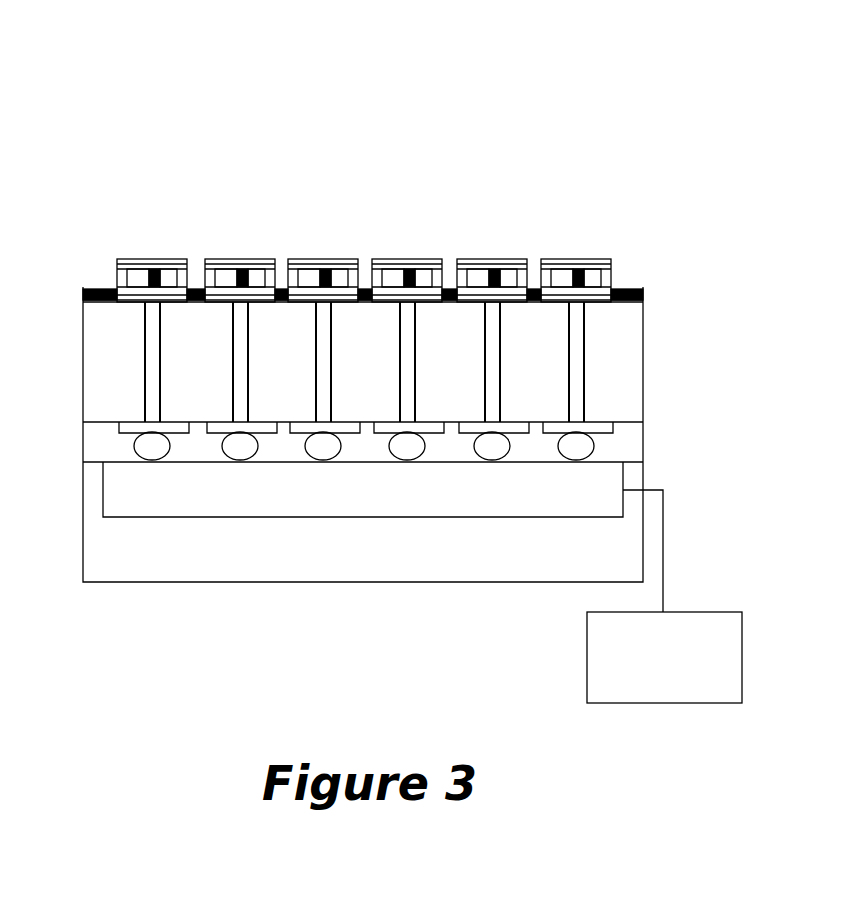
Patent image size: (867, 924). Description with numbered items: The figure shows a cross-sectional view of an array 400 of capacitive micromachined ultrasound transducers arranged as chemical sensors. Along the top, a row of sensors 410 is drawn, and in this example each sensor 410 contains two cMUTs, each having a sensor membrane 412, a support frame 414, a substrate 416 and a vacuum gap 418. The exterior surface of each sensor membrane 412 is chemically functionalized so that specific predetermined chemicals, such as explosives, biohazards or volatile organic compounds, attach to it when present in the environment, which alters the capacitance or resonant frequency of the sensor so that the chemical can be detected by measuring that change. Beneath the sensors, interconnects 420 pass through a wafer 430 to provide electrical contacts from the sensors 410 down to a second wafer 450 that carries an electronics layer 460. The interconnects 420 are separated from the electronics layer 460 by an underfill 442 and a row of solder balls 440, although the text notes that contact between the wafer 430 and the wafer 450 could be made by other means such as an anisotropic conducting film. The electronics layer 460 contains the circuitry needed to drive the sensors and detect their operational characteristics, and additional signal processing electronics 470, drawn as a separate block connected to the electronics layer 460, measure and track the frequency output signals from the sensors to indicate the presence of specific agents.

The sensor device 400 is at (160, 106).
The sensor 410 is at (426, 229).
The sensor membrane 412 is at (582, 259).
The support frame 414 is at (622, 277).
The substrate 416 is at (592, 299).
The vacuum gap 418 is at (595, 283).
The interconnects 420 is at (135, 333).
The wafer 430 is at (645, 373).
The solder balls 440 is at (137, 440).
The underfill 442 is at (645, 441).
The wafer 450 is at (325, 570).
The electronics layer 460 is at (325, 509).
The signal processing electronics 470 is at (680, 667).